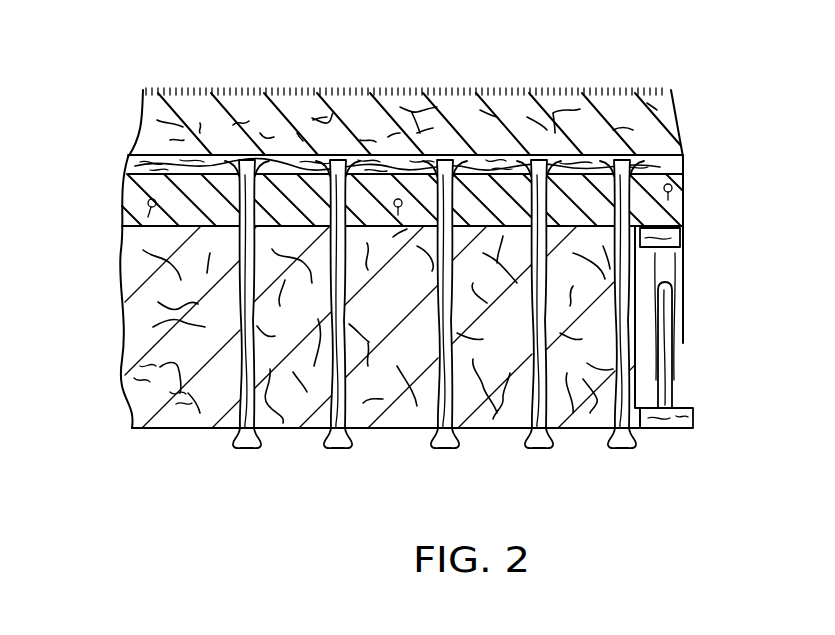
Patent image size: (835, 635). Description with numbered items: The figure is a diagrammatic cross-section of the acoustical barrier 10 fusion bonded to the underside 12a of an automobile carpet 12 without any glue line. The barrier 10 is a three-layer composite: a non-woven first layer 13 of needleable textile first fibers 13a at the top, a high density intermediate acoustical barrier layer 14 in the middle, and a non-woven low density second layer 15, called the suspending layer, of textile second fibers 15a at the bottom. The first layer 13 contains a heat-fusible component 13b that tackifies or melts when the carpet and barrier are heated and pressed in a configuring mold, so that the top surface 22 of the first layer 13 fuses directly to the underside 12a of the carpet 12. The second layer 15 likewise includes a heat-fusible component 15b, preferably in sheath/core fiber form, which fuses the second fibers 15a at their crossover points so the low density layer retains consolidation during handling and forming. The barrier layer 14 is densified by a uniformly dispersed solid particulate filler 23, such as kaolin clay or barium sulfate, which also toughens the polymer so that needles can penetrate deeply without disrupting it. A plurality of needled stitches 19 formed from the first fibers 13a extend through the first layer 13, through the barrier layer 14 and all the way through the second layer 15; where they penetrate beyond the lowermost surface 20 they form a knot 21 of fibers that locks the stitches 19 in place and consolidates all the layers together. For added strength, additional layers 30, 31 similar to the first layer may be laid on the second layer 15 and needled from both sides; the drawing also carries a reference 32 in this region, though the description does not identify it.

The acoustical barrier 10 is at (722, 142).
The carpet 12 is at (672, 92).
The underside of carpet 12a is at (681, 125).
The first layer 13 is at (130, 167).
The first fibers 13a is at (148, 167).
The heat-fusible component 13b is at (373, 163).
The intermediate acoustical barrier layer 14 is at (122, 200).
The second layer 15 is at (126, 342).
The second fibers 15a is at (178, 398).
The heat-fusible component of second layer 15b is at (126, 382).
The needled stitches 19 is at (254, 322).
The lowermost surface 20 is at (485, 430).
The knot 21 is at (247, 452).
The top surface 22 is at (497, 153).
The filler 23 is at (150, 210).
The additional layer 30 is at (668, 420).
The additional layer 31 is at (672, 242).
The pin 32 is at (670, 347).